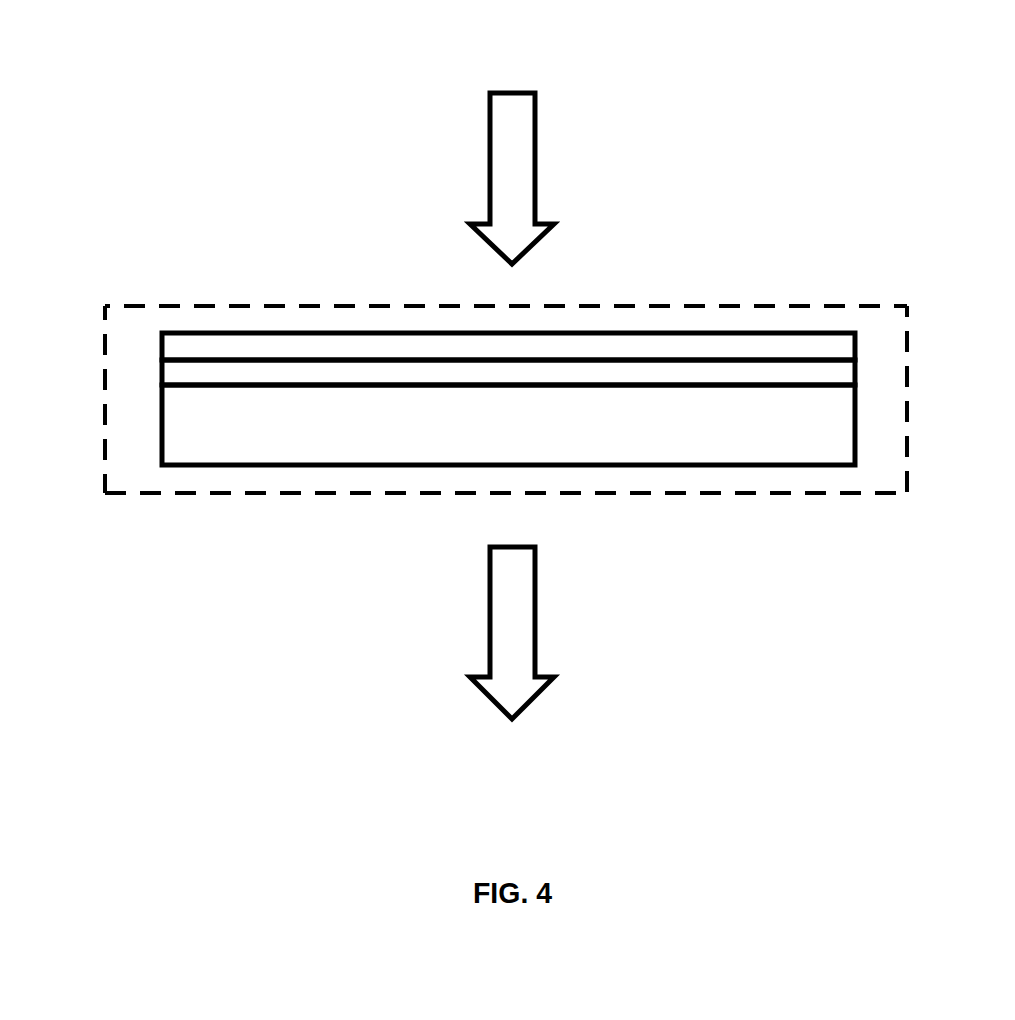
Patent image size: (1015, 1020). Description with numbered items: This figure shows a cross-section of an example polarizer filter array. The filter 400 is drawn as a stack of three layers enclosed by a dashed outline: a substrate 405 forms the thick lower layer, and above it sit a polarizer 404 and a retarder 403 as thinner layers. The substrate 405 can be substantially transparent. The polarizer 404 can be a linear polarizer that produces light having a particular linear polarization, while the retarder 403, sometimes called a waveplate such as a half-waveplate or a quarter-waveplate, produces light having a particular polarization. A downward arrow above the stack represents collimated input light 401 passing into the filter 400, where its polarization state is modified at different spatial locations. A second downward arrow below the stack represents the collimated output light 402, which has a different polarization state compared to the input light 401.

The filter 400 is at (818, 306).
The input light 401 is at (512, 137).
The output light 402 is at (512, 680).
The retarder 403 is at (162, 373).
The polarizer 404 is at (853, 343).
The substrate 405 is at (857, 455).